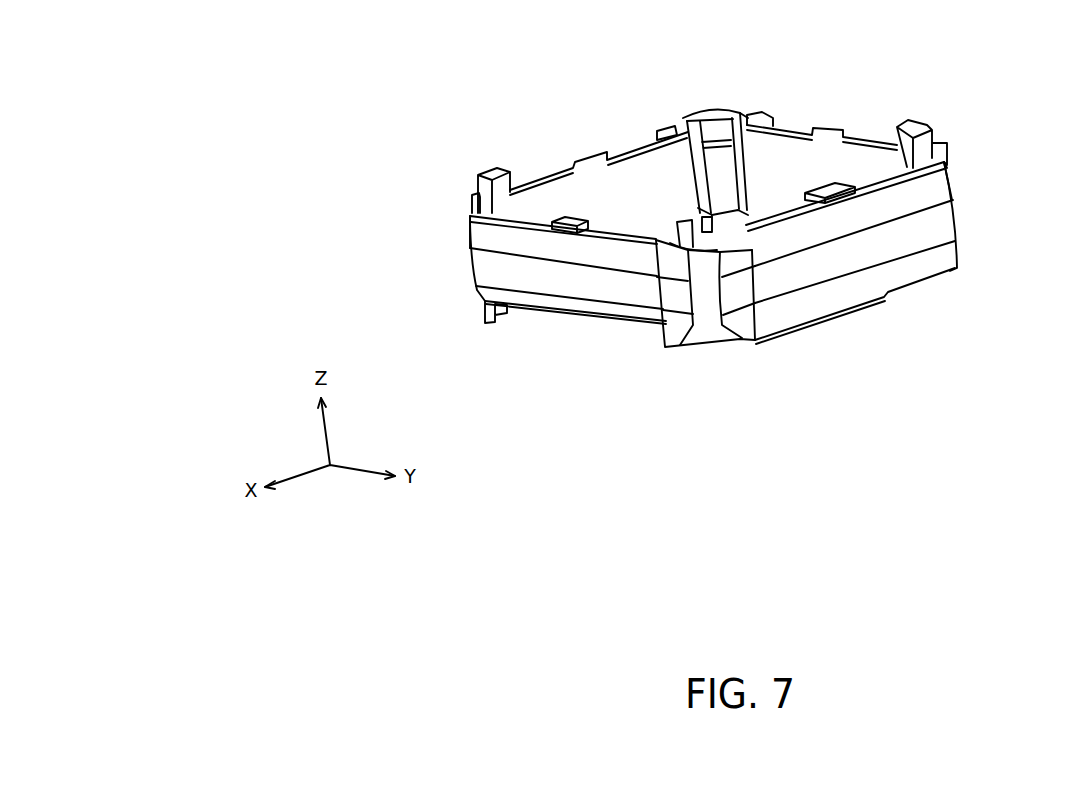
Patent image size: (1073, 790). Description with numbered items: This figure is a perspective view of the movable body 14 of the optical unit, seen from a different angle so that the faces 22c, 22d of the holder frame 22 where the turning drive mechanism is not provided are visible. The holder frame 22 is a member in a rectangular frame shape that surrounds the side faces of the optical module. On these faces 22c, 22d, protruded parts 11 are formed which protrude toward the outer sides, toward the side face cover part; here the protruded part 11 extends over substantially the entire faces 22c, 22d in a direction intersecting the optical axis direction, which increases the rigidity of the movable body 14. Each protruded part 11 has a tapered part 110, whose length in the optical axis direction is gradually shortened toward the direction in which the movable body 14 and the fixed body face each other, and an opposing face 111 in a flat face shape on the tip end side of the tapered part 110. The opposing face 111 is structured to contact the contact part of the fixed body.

The movable body 14 is at (1004, 107).
The holder frame 22 is at (693, 113).
The protruded part 11 is at (557, 283).
The opposing face 111 is at (520, 275).
The face of the holder frame 22c is at (606, 309).
The face of the holder frame 22d is at (840, 298).
The tapered part 110 is at (482, 236).